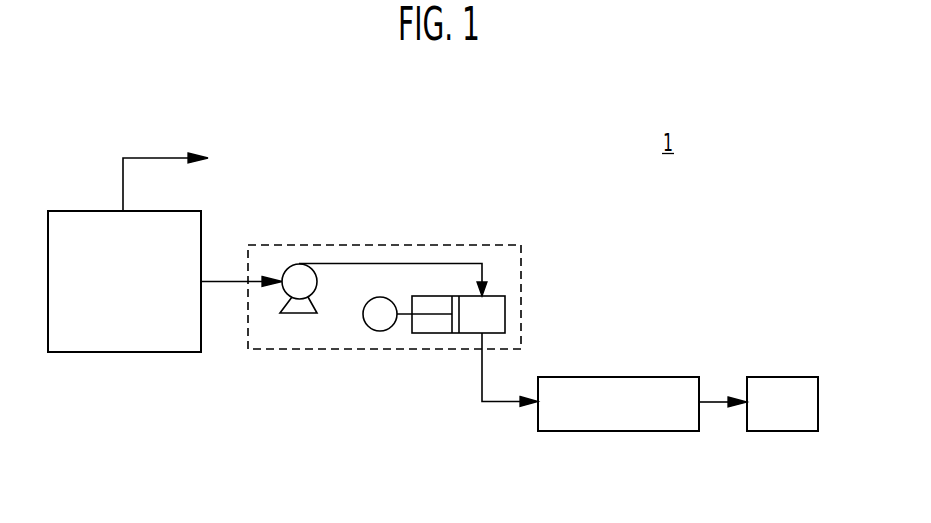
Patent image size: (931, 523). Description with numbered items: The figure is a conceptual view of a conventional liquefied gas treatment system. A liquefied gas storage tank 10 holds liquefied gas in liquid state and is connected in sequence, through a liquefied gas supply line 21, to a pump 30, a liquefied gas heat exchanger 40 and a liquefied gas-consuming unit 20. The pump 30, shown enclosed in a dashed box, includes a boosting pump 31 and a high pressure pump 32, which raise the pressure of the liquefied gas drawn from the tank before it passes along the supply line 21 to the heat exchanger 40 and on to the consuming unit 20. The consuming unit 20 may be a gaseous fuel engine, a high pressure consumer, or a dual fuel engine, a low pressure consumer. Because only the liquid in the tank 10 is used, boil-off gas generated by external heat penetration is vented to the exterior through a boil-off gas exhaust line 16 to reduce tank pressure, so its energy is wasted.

The liquefied gas storage tank 10 is at (92, 210).
The boil-off gas exhaust line 16 is at (157, 157).
The liquefied gas-consuming unit 20 is at (772, 376).
The liquefied gas supply line 21 is at (228, 284).
The pump 30 is at (413, 243).
The boosting pump 31 is at (300, 315).
The high pressure pump 32 is at (428, 334).
The liquefied gas heat exchanger 40 is at (622, 376).